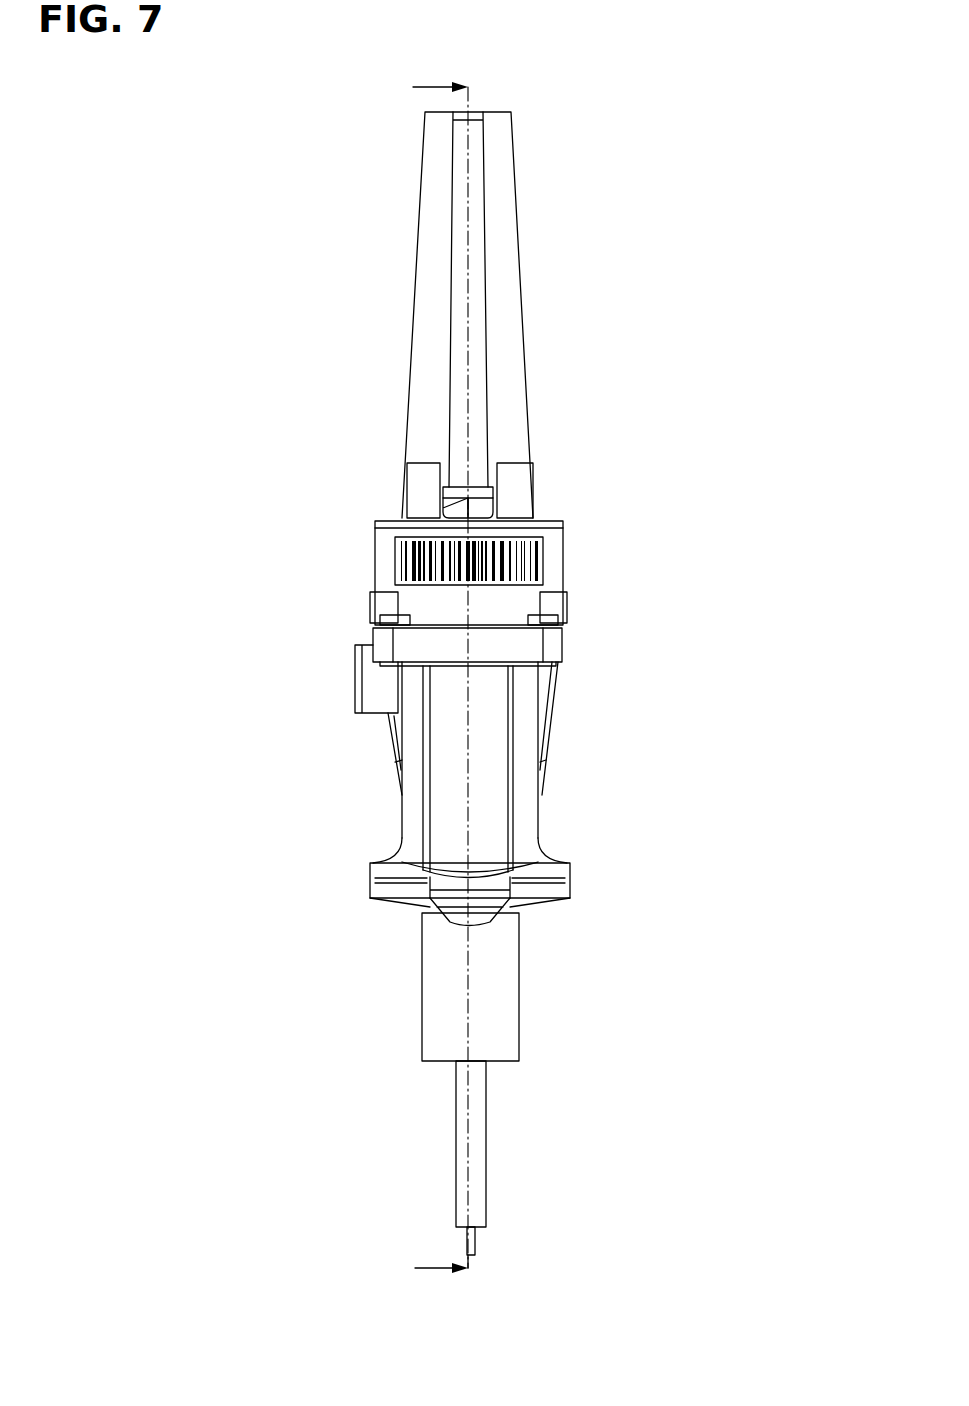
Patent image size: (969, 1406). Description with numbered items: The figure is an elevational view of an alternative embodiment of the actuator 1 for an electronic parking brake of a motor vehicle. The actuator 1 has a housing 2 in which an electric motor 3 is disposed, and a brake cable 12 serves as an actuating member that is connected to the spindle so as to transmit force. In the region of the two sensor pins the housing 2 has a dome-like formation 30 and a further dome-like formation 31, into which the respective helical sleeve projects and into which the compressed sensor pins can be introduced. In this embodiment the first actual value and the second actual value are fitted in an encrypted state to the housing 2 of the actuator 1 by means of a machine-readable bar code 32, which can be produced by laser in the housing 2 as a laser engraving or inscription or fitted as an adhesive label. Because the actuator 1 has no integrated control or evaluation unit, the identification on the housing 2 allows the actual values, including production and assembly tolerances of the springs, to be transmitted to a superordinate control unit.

The actuator 1 is at (214, 122).
The housing 2 is at (565, 563).
The electric motor 3 is at (482, 727).
The brake cable 12 is at (475, 1242).
The dome-like formation 30 is at (513, 463).
The dome-like formation 31 is at (423, 463).
The bar code 32 is at (382, 565).